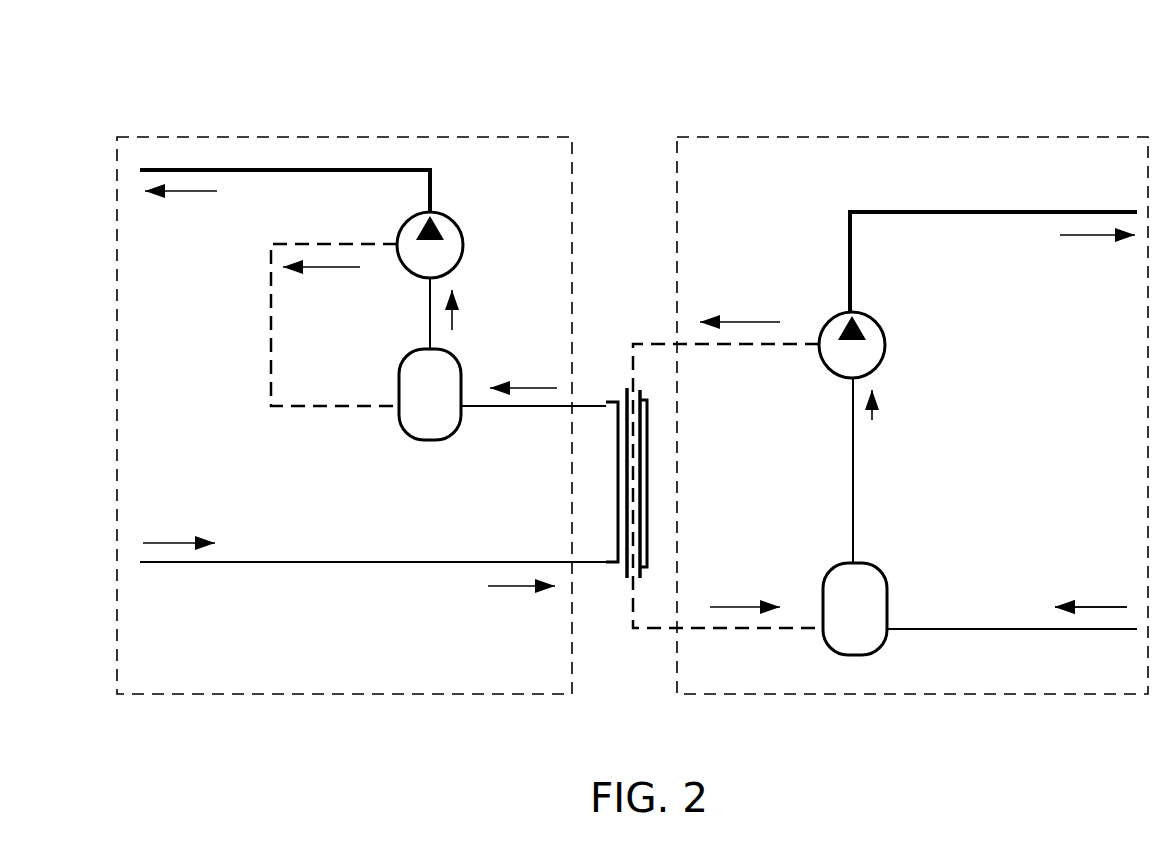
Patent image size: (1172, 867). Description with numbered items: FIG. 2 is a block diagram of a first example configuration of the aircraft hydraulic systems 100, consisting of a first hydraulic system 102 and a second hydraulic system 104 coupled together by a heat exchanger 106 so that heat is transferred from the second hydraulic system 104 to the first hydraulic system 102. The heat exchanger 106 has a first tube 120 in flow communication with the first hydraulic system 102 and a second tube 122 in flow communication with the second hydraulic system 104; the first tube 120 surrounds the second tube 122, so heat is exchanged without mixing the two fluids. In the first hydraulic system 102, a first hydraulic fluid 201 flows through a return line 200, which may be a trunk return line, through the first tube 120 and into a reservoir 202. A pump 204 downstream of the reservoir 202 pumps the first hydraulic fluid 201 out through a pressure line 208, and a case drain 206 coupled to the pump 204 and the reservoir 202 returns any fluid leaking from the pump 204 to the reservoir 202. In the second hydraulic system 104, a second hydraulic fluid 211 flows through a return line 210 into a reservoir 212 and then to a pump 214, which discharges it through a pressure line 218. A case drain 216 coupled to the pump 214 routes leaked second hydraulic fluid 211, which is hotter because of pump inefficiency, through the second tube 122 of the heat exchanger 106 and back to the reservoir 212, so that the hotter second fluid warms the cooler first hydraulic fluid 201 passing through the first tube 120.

The system 100 is at (605, 361).
The first hydraulic system 102 is at (371, 137).
The second hydraulic system 104 is at (792, 137).
The heat exchanger 106 is at (689, 493).
The first tube 120 is at (647, 485).
The second tube 122 is at (640, 577).
The return line 200 is at (234, 562).
The first hydraulic fluid 201 is at (357, 598).
The reservoir 202 is at (428, 442).
The pump 204 is at (455, 222).
The case drain 206 is at (271, 302).
The pressure line 208 is at (270, 172).
The return line 210 is at (1035, 629).
The second hydraulic fluid 211 is at (962, 640).
The reservoir 212 is at (868, 566).
The pump 214 is at (873, 318).
The case drain 216 is at (700, 346).
The pressure line 218 is at (1047, 212).